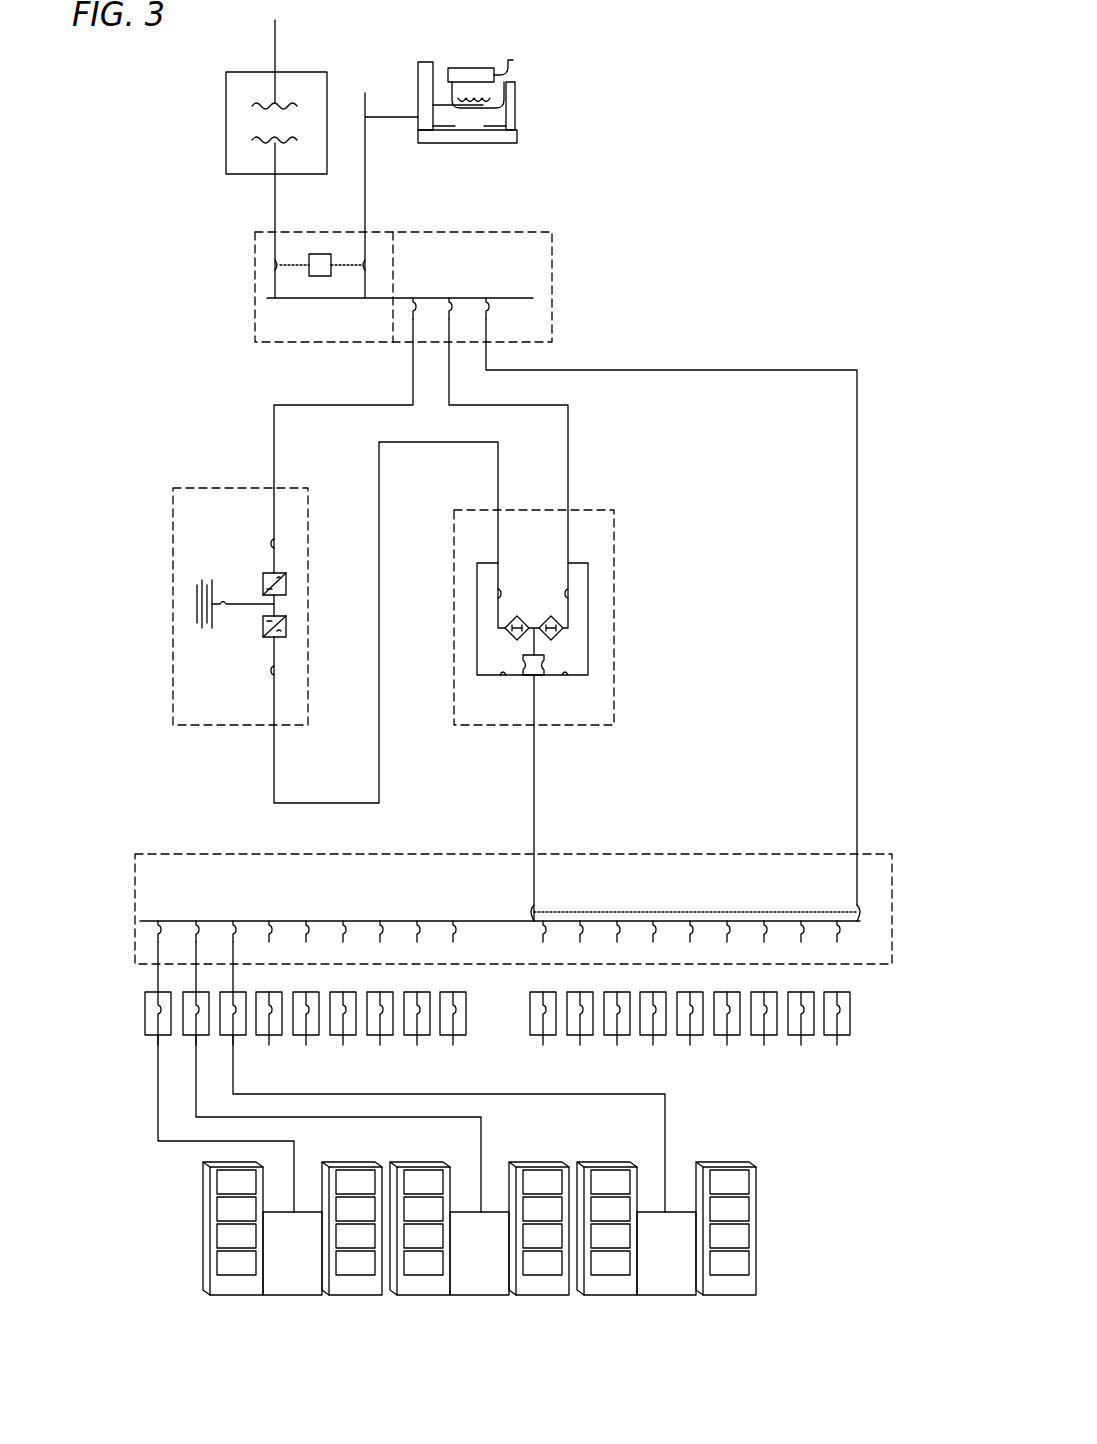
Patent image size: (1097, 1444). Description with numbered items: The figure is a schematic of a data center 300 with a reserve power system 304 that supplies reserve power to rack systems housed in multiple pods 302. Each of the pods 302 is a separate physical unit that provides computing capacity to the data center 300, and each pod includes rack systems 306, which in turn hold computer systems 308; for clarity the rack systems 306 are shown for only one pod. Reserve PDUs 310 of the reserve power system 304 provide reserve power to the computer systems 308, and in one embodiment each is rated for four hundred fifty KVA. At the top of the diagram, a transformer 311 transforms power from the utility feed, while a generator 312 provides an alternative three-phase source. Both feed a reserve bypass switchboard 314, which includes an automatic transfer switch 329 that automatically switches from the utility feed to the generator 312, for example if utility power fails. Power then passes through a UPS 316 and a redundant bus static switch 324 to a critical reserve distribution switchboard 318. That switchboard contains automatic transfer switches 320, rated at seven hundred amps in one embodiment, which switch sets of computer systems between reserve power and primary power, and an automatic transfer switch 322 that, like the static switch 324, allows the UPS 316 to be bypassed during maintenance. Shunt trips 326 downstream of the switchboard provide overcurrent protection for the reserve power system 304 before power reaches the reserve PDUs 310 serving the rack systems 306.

The data center 300 is at (762, 98).
The pods 302 is at (365, 1048).
The reserve power system 304 is at (180, 392).
The rack systems 306 is at (385, 1300).
The computer systems 308 is at (746, 1228).
The reserve PDUs 310 is at (666, 1253).
The transformer 311 is at (225, 93).
The generator 312 is at (517, 103).
The reserve bypass switchboard 314 is at (552, 280).
The UPS 316 is at (182, 526).
The critical reserve distribution switchboard 318 is at (135, 880).
The automatic transfer switches 320 is at (158, 949).
The automatic transfer switch 322 is at (860, 908).
The redundant bus static switch 324 is at (614, 592).
The shunt trips 326 is at (151, 1022).
The automatic transfer switch 329 is at (320, 254).